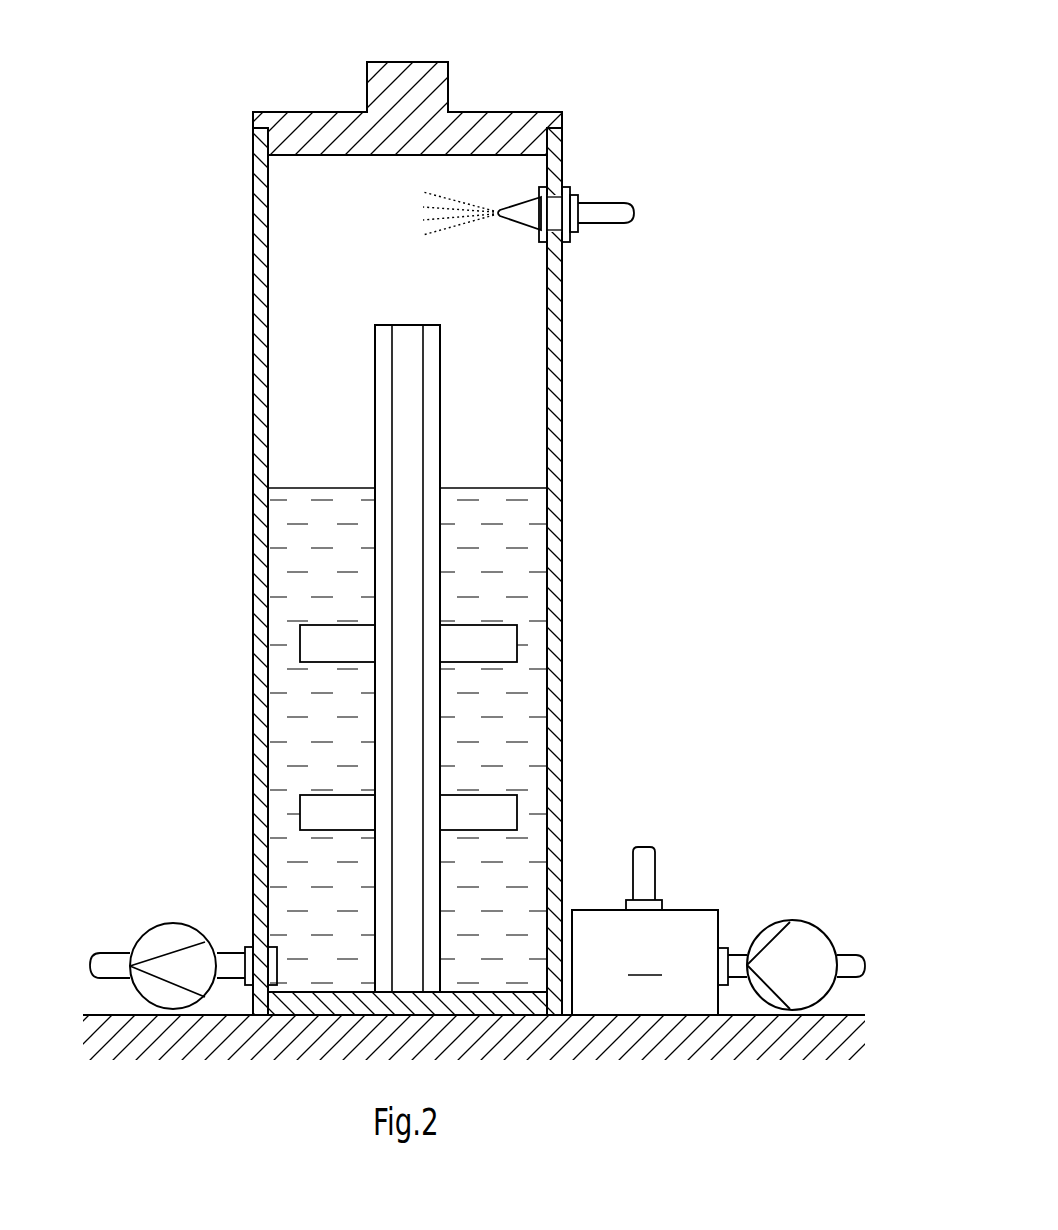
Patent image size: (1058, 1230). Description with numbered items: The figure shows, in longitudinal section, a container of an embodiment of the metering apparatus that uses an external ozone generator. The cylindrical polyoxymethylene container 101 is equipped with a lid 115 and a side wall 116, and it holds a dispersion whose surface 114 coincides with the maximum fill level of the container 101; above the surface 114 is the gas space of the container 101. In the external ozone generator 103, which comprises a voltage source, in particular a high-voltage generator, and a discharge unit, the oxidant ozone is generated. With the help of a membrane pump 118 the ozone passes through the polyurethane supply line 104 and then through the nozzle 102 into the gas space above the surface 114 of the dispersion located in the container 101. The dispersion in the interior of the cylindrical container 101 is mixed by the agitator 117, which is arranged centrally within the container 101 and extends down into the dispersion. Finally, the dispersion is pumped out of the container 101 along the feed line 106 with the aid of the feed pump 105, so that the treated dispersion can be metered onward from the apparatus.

The container 101 is at (694, 80).
The nozzle 102 is at (525, 218).
The external ozone generator 103 is at (659, 962).
The supply line 104 is at (607, 205).
The feed pump 105 is at (170, 922).
The feed line 106 is at (115, 958).
The surface 114 is at (485, 487).
The lid 115 is at (315, 130).
The side wall 116 is at (555, 358).
The agitator 117 is at (385, 405).
The membrane pump 118 is at (800, 925).